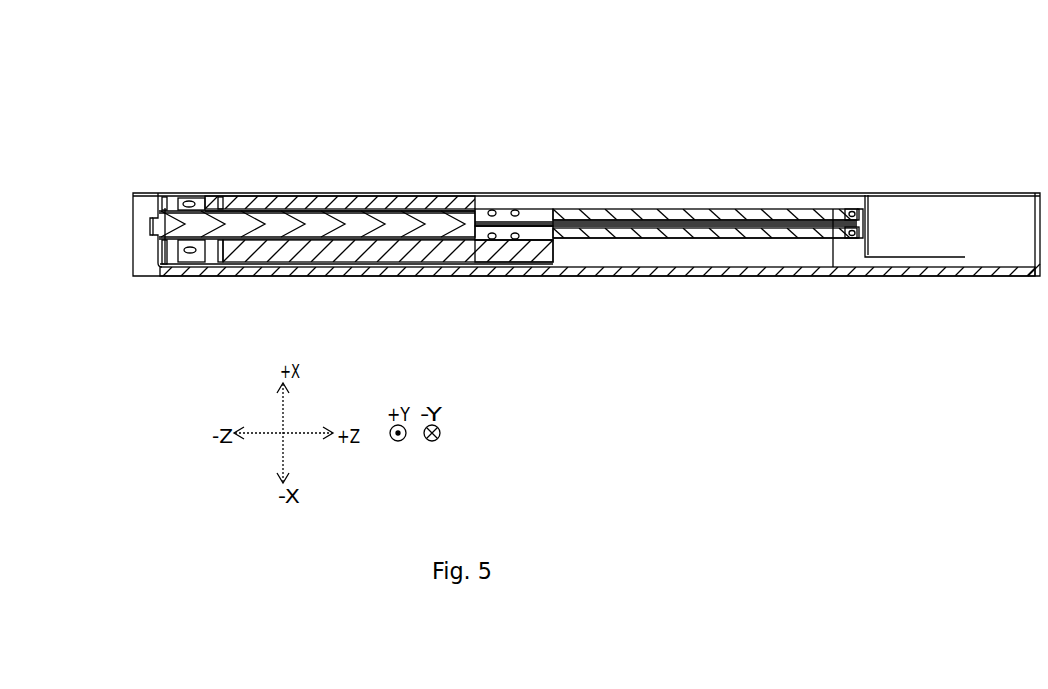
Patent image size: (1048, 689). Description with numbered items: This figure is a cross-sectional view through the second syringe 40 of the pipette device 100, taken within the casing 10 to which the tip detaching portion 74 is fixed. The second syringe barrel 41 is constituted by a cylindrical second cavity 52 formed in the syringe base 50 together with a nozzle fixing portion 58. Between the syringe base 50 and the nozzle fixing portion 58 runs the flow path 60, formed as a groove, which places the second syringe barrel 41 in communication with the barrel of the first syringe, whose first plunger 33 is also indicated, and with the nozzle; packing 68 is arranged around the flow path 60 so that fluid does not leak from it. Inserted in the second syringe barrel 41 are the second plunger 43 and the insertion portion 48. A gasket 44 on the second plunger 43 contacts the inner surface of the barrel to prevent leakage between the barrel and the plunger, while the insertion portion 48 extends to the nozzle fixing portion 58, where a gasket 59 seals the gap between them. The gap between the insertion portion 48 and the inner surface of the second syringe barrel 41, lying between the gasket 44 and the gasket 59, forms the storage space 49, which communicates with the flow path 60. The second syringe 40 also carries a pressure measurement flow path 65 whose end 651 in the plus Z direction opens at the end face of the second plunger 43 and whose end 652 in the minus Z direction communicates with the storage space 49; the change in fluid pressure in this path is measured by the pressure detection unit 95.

The pipette device 100 is at (622, 92).
The casing 10 is at (923, 194).
The tip detaching portion 74 is at (140, 232).
The second syringe 40 is at (393, 194).
The second syringe barrel 41 is at (286, 194).
The nozzle fixing portion 58 is at (203, 194).
The flow path 60 is at (223, 196).
The syringe base 50 is at (304, 194).
The second cavity 52 is at (350, 194).
The insertion portion 48 is at (437, 232).
The storage space 49 is at (345, 264).
The gasket 59 is at (190, 264).
The packing 68 is at (223, 264).
The first plunger 33 is at (545, 194).
The gasket 44 is at (513, 240).
The end of the pressure measurement flow path in the −Z direction 652 is at (482, 238).
The second plunger 43 is at (718, 234).
The pressure measurement flow path 65 is at (668, 226).
The end of the pressure measurement flow path in the +Z direction 651 is at (845, 240).
The pressure detection unit 95 is at (862, 250).